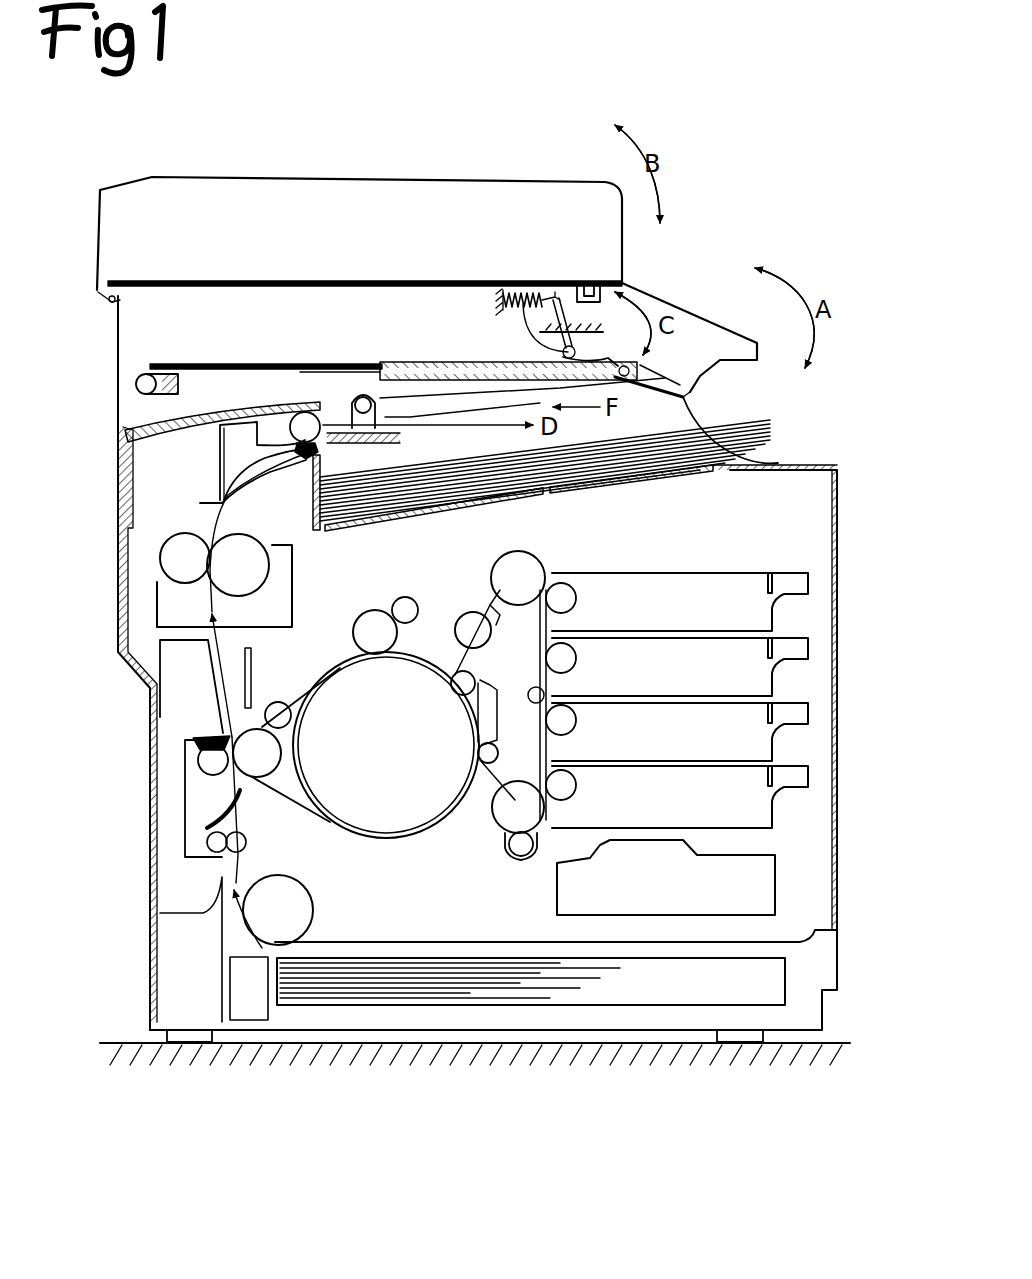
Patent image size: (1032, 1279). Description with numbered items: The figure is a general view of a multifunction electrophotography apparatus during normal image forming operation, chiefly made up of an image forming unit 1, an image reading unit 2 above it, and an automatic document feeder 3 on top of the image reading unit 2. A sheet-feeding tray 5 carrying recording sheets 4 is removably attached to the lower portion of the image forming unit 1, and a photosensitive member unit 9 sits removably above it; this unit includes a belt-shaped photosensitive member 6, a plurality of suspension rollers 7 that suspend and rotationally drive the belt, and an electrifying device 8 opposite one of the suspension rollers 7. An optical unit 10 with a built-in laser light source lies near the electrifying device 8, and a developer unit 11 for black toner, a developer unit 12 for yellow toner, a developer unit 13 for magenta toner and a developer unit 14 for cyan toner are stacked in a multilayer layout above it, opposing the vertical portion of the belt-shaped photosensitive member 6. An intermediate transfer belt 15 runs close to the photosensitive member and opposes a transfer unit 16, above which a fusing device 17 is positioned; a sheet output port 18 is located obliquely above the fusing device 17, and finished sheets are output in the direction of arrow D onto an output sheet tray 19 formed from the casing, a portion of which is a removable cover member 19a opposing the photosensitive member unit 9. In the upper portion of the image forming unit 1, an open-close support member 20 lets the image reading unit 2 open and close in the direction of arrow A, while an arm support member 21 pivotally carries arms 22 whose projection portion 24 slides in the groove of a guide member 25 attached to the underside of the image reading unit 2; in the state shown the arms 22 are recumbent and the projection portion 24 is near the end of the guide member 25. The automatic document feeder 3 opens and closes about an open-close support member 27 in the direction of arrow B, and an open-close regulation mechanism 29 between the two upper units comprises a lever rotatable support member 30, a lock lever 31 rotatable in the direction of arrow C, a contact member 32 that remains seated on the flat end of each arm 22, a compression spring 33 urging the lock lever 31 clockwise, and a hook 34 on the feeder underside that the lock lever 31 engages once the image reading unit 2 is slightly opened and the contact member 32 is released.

The image forming unit 1 is at (838, 478).
The image reading unit 2 is at (120, 336).
The automatic document feeder 3 is at (108, 235).
The recording sheets 4 is at (760, 440).
The sheet-feeding tray 5 is at (610, 985).
The belt-shaped photosensitive member 6 is at (478, 622).
The suspension rollers 7 is at (522, 570).
The electrifying device 8 is at (517, 852).
The photosensitive member unit 9 is at (490, 595).
The optical unit 10 is at (764, 876).
The developer unit 11 is at (761, 801).
The developer unit 12 is at (761, 736).
The developer unit 13 is at (761, 671).
The developer unit 14 is at (761, 606).
The intermediate transfer belt 15 is at (290, 788).
The transfer unit 16 is at (202, 760).
The fusing device 17 is at (160, 588).
The sheet output port 18 is at (318, 455).
The output sheet tray 19 is at (652, 469).
The cover member 19a is at (530, 488).
The open-close support member 20 is at (135, 386).
The arm support member 21 is at (360, 396).
The arms 22 is at (372, 368).
The projection portion 24 is at (690, 387).
The guide member 25 is at (405, 358).
The open-close support member 27 is at (104, 298).
The open-close regulation mechanism 29 is at (620, 88).
The lever rotatable support member 30 is at (520, 298).
The lock lever 31 is at (540, 340).
The contact member 32 is at (565, 340).
The compression spring 33 is at (505, 298).
The hook 34 is at (590, 355).